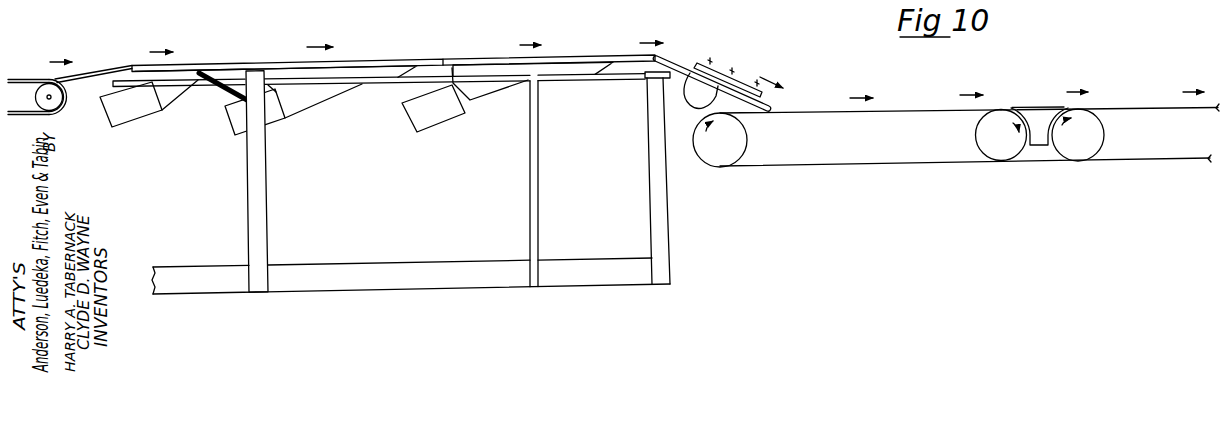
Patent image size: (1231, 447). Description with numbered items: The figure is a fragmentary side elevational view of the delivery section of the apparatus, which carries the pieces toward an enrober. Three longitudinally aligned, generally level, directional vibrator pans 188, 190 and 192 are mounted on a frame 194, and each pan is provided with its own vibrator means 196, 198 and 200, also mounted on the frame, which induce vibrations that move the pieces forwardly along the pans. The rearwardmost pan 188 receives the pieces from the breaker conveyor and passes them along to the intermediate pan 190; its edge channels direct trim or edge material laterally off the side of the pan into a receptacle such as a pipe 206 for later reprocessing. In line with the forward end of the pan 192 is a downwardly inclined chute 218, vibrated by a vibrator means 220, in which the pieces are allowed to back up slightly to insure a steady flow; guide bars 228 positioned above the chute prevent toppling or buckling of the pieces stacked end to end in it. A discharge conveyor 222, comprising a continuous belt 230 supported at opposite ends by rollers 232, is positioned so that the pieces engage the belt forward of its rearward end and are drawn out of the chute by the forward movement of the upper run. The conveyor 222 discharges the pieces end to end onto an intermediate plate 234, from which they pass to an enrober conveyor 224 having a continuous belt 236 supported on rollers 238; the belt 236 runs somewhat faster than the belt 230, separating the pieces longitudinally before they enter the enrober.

The rearwardmost directional vibrator pan 188 is at (183, 56).
The intermediate directional vibrator pan 190 is at (369, 55).
The directional vibrator pan 192 is at (576, 55).
The frame 194 is at (445, 262).
The vibrator means 196 is at (136, 112).
The vibrator means 198 is at (280, 114).
The vibrator means 200 is at (441, 113).
The pipe 206 is at (268, 212).
The chute 218 is at (679, 59).
The vibrator means 220 is at (690, 98).
The discharge conveyor 222 is at (893, 101).
The enrober conveyor 224 is at (1125, 95).
The guide bars 228 is at (716, 66).
The continuous belt 230 is at (812, 165).
The rollers 232 is at (708, 160).
The intermediate plate 234 is at (1036, 110).
The continuous belt 236 is at (1127, 158).
The rollers 238 is at (1069, 146).